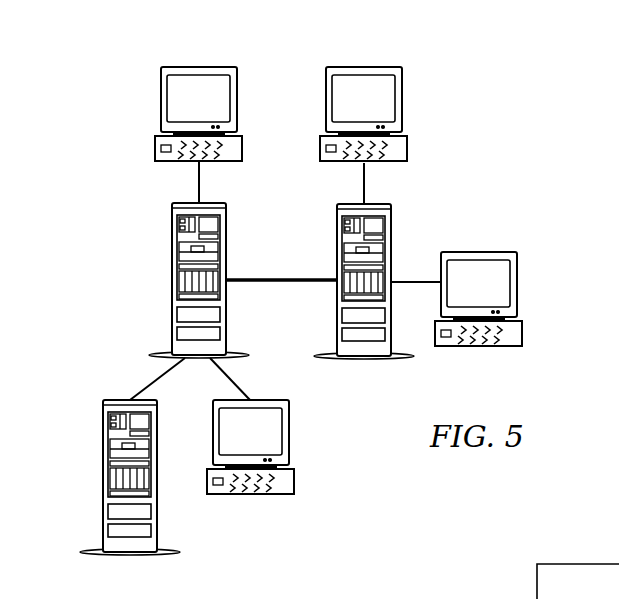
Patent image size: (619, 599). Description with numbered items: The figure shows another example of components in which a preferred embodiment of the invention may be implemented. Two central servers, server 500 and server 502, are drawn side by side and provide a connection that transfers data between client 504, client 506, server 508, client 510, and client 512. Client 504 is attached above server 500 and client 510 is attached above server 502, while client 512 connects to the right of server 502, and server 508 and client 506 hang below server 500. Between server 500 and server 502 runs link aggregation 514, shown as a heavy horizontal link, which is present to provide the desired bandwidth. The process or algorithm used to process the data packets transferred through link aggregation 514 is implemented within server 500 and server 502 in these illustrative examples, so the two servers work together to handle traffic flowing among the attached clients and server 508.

The server 500 is at (172, 260).
The server 502 is at (337, 260).
The client 504 is at (161, 100).
The client 506 is at (289, 430).
The server 508 is at (103, 467).
The client 510 is at (402, 100).
The client 512 is at (517, 272).
The link aggregation 514 is at (280, 282).